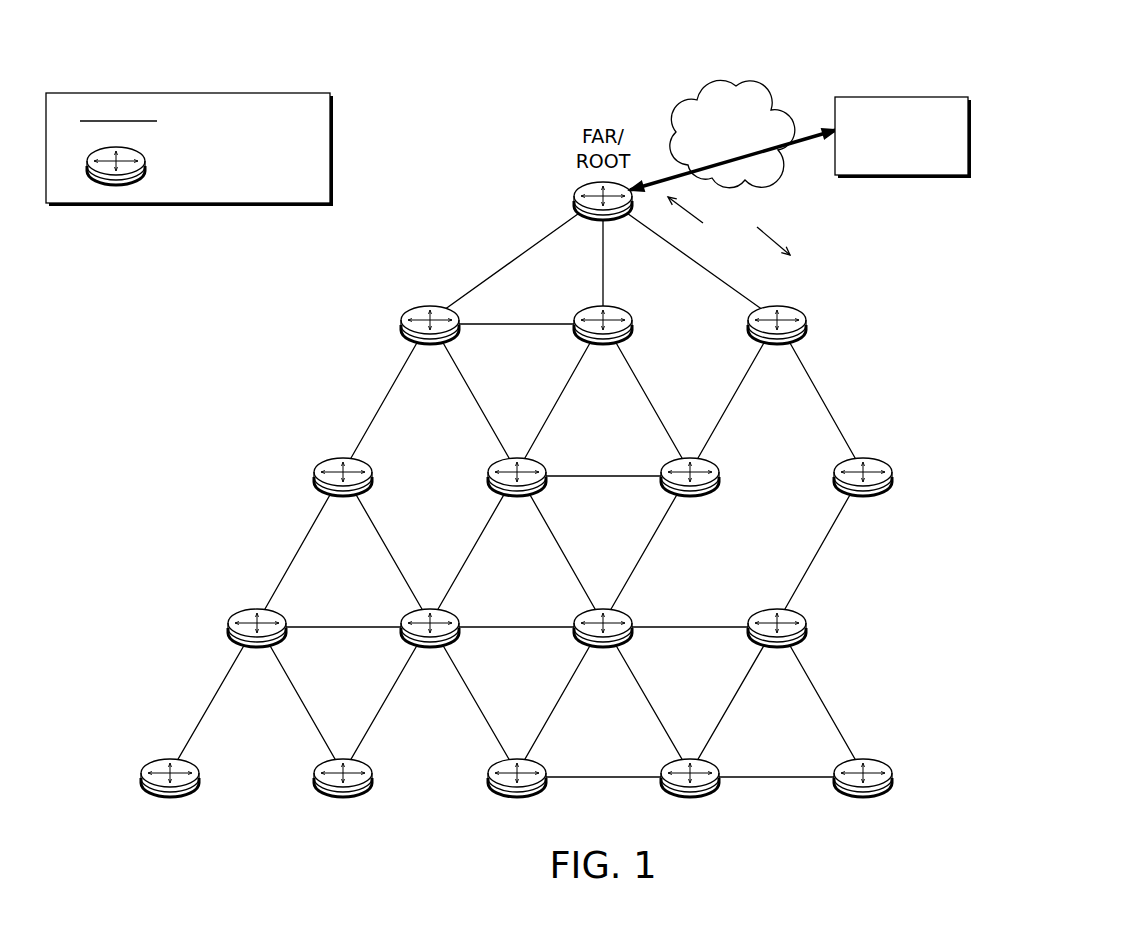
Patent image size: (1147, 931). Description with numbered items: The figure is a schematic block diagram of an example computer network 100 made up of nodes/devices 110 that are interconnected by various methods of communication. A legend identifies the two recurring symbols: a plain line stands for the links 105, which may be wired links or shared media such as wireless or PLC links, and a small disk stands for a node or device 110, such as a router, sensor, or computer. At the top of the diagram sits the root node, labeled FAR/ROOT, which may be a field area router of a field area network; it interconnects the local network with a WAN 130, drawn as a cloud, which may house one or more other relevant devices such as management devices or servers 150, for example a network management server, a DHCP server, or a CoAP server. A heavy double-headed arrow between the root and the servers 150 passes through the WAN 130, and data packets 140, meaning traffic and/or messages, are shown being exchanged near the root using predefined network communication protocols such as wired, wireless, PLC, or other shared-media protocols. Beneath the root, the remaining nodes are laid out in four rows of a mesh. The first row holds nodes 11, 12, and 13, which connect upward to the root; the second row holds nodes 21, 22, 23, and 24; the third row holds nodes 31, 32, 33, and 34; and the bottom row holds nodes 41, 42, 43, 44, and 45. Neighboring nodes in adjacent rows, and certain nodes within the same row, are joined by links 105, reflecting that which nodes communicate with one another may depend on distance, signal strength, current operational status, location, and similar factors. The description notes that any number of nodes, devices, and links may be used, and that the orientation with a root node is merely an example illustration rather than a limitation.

The computer network 100 is at (1062, 150).
The links 105 is at (183, 120).
The nodes/devices 110 is at (194, 166).
The WAN 130 is at (708, 151).
The data packets 140 is at (714, 238).
The servers 150 is at (886, 160).
The node 11 is at (430, 344).
The node 12 is at (603, 344).
The node 13 is at (777, 344).
The node 21 is at (343, 495).
The node 22 is at (517, 495).
The node 23 is at (690, 495).
The node 24 is at (863, 495).
The node 31 is at (257, 645).
The node 32 is at (430, 645).
The node 33 is at (603, 645).
The node 34 is at (777, 645).
The node 41 is at (170, 795).
The node 42 is at (343, 795).
The node 43 is at (517, 795).
The node 44 is at (690, 795).
The node 45 is at (863, 795).